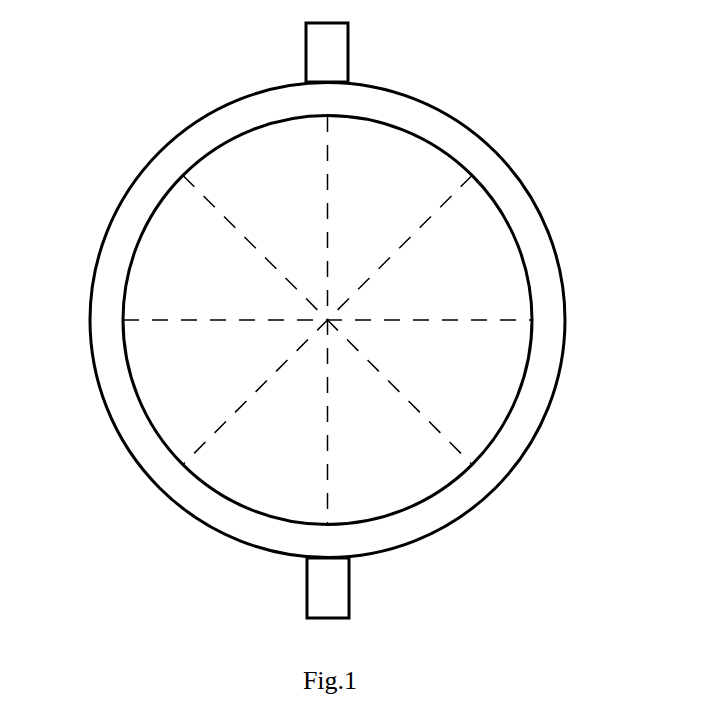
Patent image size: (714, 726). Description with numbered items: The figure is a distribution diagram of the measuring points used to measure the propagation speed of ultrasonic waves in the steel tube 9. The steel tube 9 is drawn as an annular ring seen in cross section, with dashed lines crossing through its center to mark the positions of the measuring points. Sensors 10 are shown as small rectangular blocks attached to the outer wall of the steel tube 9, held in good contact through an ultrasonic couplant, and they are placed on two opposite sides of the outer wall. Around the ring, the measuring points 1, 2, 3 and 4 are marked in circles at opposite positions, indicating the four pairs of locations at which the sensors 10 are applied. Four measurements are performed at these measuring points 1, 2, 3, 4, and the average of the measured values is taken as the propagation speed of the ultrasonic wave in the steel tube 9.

The steel tube 9 is at (543, 267).
The sensors 10 is at (328, 52).
The measuring point ① 1 is at (327, 321).
The measuring point ② 2 is at (318, 321).
The measuring point ③ 3 is at (325, 322).
The measuring point ④ 4 is at (274, 322).